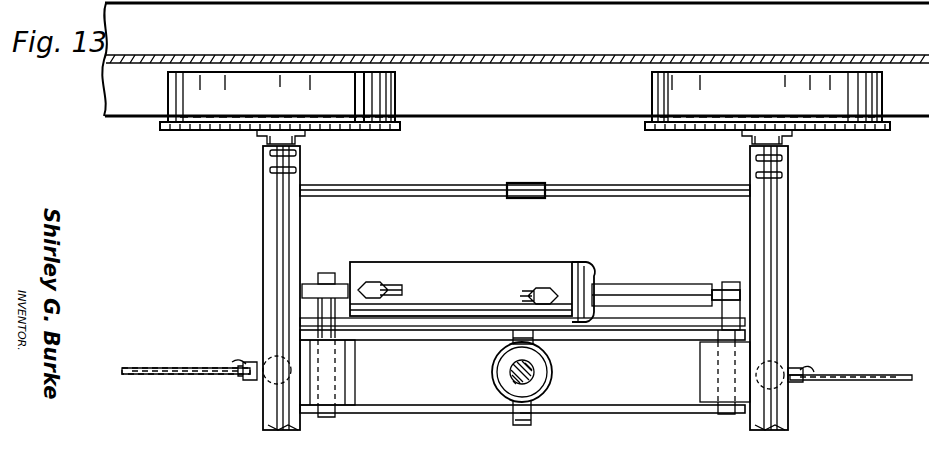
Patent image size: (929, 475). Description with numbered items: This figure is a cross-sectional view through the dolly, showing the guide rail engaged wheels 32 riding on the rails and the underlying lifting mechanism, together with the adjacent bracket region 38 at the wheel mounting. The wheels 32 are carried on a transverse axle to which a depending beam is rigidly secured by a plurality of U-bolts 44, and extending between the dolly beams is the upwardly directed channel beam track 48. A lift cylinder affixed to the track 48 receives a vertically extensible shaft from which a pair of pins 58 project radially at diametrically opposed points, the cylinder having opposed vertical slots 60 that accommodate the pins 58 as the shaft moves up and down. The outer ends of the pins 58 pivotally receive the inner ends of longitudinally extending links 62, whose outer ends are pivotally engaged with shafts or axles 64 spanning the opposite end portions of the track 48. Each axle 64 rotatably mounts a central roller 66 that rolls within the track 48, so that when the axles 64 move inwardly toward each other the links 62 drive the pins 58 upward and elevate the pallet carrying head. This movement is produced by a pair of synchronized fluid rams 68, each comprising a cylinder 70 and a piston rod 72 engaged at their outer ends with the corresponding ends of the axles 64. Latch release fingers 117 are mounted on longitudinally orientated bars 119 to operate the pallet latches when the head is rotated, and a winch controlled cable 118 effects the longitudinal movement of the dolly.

The guide rail engaged wheel 32 is at (881, 106).
The mounting bracket plate 38 is at (878, 131).
The U-bolt 44 is at (328, 170).
The channel beam track 48 is at (457, 397).
The pin 58 is at (535, 410).
The vertical slot 60 is at (545, 388).
The link 62 is at (637, 335).
The axle 64 is at (325, 273).
The roller 66 is at (340, 388).
The fluid ram 68 is at (476, 277).
The cylinder 70 is at (424, 274).
The piston rod 72 is at (633, 292).
The latch release finger 117 is at (530, 184).
The cable 118 is at (854, 376).
The longitudinally orientated bar 119 is at (688, 194).